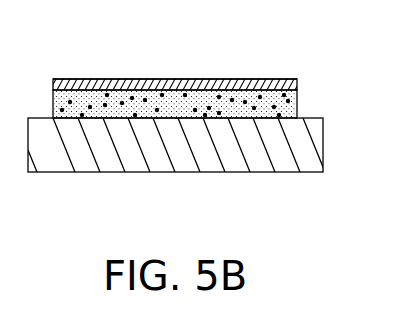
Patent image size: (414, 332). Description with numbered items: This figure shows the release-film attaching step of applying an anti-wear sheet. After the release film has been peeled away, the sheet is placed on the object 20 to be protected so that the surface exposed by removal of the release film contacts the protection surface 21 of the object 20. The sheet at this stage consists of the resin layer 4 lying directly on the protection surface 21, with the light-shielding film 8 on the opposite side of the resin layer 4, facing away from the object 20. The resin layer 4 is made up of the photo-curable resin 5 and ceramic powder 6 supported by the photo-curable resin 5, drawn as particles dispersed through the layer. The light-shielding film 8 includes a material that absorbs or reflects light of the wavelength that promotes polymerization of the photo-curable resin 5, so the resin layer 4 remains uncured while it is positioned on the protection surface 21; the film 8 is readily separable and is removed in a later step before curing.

The resin layer 4 is at (298, 98).
The photo-curable resin 5 is at (162, 97).
The ceramic powder 6 is at (131, 97).
The light-shielding film 8 is at (225, 78).
The object to be protected 20 is at (238, 173).
The protection surface 21 is at (219, 76).